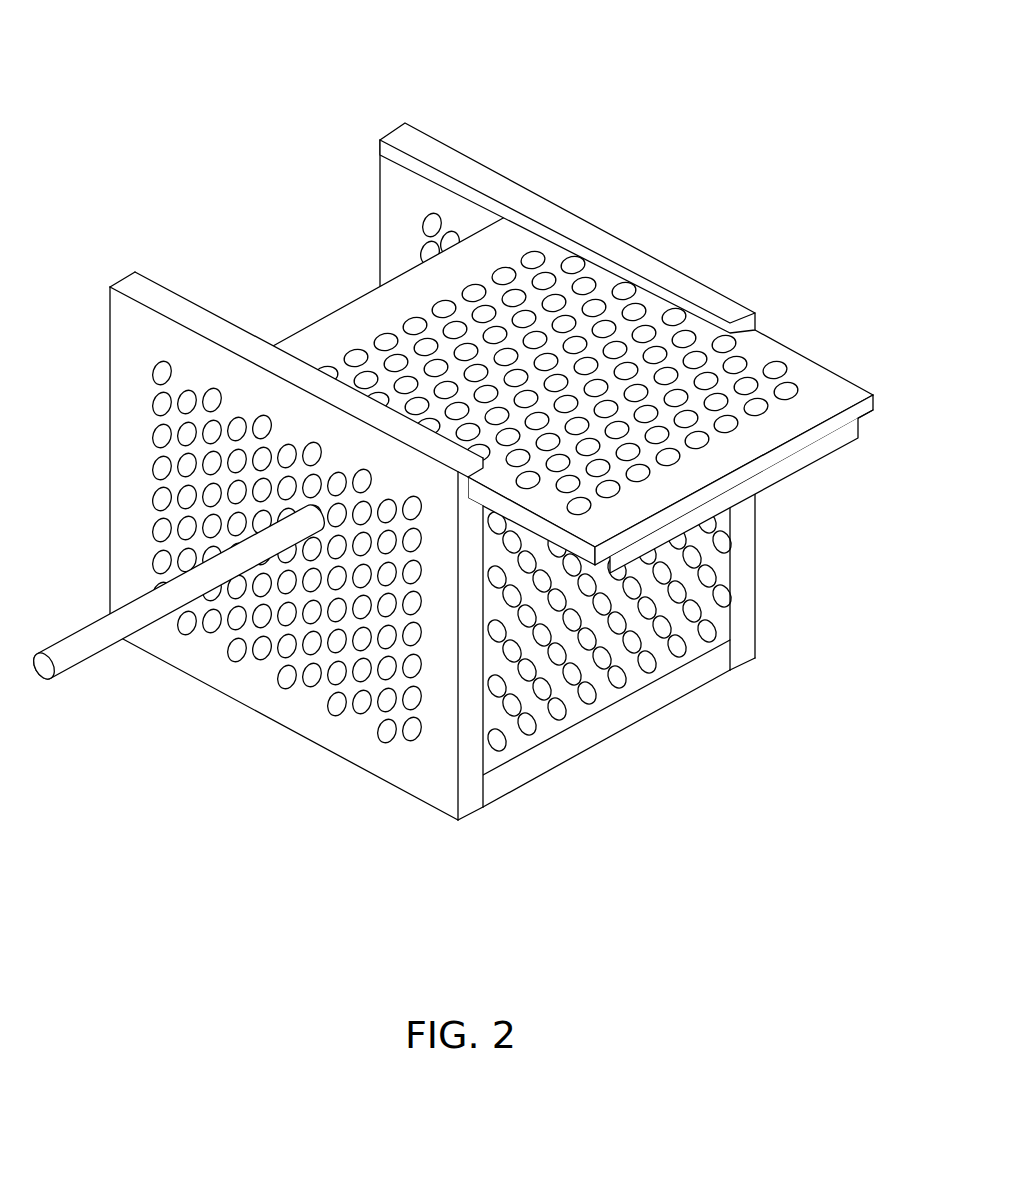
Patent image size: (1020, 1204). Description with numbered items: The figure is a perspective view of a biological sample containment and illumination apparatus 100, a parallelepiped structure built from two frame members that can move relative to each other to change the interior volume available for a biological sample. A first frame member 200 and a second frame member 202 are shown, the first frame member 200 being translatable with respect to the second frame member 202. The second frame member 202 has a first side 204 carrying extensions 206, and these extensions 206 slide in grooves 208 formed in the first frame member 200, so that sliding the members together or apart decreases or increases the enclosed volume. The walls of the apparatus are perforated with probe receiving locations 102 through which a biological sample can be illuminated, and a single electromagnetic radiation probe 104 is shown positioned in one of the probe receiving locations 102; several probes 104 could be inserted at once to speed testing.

The biological sample containment and illumination apparatus 100 is at (469, 428).
The probe receiving location 102 is at (152, 368).
The probe 104 is at (65, 639).
The first frame member 200 is at (254, 521).
The second frame member 202 is at (592, 506).
The first side 204 is at (823, 390).
The extension 206 is at (870, 416).
The groove 208 is at (380, 159).